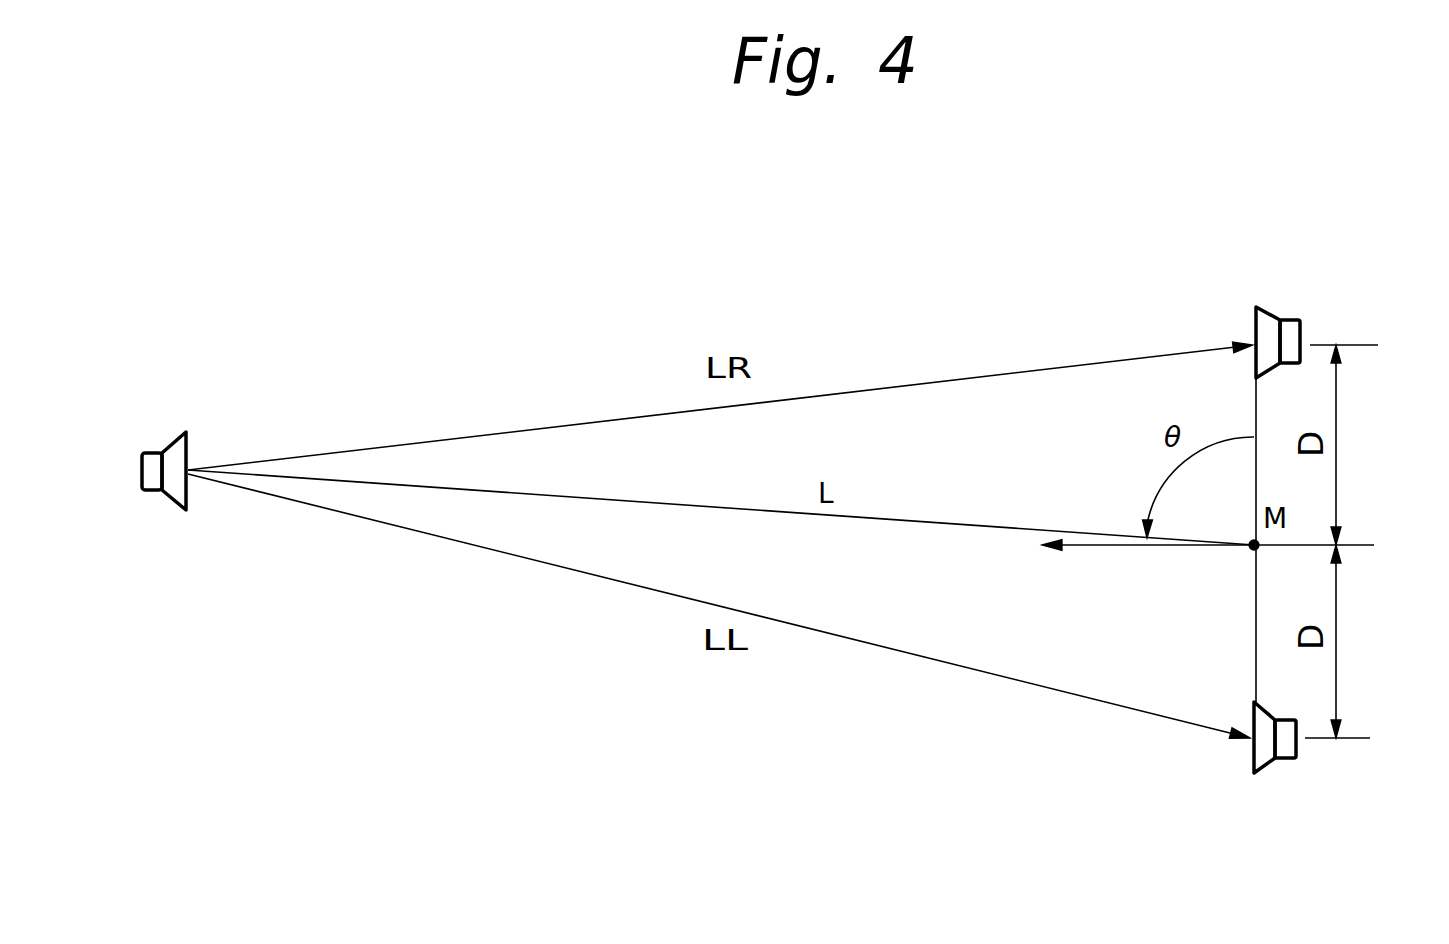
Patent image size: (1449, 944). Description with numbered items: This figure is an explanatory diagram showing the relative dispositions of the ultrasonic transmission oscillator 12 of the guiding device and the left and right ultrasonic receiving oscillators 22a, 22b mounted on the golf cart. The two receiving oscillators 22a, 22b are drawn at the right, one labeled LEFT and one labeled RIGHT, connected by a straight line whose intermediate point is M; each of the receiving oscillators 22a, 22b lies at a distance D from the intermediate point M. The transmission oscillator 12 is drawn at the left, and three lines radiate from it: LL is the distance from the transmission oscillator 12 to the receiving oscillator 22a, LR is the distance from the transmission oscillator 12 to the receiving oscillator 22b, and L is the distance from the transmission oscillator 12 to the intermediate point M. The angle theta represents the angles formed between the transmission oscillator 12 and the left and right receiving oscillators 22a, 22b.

The ultrasonic transmission oscillator 12 is at (150, 455).
The ultrasonic receiving oscillator 22a is at (1300, 752).
The ultrasonic receiving oscillator 22b is at (1303, 314).